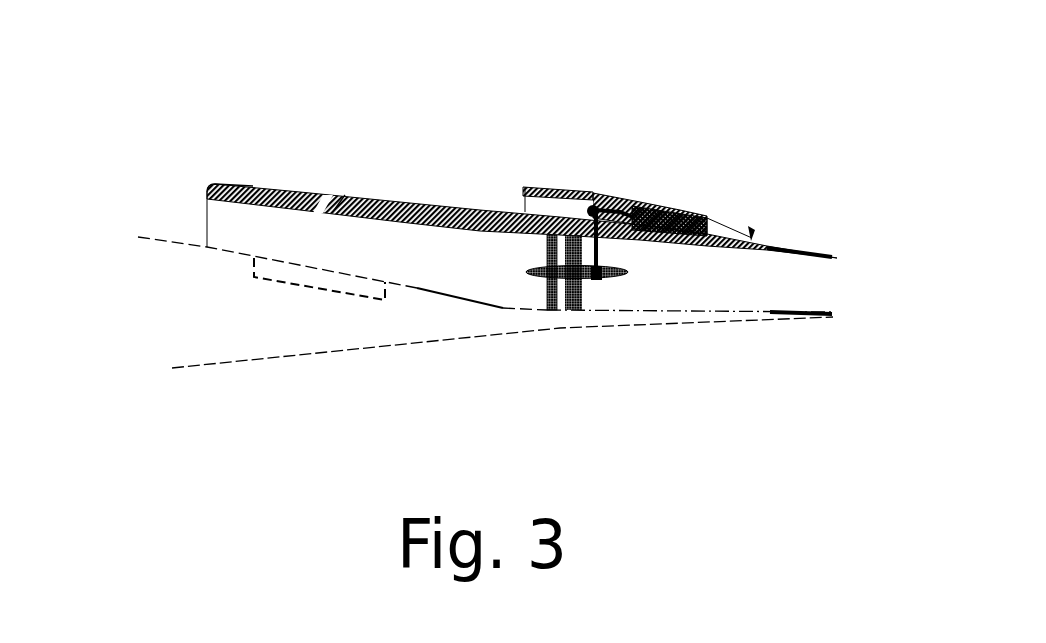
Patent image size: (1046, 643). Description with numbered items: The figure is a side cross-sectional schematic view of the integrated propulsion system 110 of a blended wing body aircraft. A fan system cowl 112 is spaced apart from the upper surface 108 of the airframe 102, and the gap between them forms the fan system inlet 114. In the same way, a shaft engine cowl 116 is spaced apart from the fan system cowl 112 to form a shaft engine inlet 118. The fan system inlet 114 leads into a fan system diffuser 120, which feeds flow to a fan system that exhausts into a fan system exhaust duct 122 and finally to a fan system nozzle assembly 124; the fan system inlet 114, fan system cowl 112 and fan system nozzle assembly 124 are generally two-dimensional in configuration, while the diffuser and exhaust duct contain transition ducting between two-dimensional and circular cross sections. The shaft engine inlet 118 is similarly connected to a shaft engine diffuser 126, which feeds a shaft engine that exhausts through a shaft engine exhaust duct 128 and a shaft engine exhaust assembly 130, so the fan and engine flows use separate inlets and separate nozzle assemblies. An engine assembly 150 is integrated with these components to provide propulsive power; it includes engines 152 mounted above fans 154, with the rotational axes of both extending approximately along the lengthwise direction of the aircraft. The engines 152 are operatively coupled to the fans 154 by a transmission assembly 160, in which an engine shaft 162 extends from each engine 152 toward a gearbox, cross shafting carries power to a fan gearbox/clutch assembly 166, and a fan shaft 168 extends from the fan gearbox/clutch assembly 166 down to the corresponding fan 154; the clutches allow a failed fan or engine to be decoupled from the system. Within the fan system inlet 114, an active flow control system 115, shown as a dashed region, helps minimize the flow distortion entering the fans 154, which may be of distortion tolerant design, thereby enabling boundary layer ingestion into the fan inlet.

The airframe 102 is at (157, 400).
The upper surface 108 is at (138, 237).
The integrated propulsion system 110 is at (192, 85).
The fan system cowl 112 is at (253, 185).
The fan system inlet 114 is at (200, 215).
The active flow control system 115 is at (287, 287).
The shaft engine cowl 116 is at (533, 187).
The shaft engine inlet 118 is at (510, 197).
The fan system diffuser 120 is at (522, 221).
The fan system exhaust duct 122 is at (690, 289).
The fan system nozzle assembly 124 is at (843, 325).
The shaft engine diffuser 126 is at (551, 208).
The shaft engine exhaust duct 128 is at (717, 230).
The shaft engine exhaust assembly 130 is at (752, 232).
The engine assembly 150 is at (752, 128).
The engine 152 is at (653, 215).
The fan 154 is at (545, 270).
The transmission assembly 160 is at (673, 330).
The engine shaft 162 is at (618, 213).
The fan gearbox/clutch assembly 166 is at (597, 207).
The fan shaft 168 is at (597, 248).